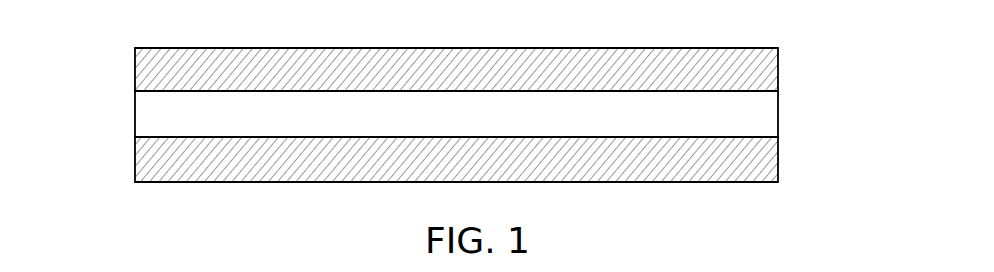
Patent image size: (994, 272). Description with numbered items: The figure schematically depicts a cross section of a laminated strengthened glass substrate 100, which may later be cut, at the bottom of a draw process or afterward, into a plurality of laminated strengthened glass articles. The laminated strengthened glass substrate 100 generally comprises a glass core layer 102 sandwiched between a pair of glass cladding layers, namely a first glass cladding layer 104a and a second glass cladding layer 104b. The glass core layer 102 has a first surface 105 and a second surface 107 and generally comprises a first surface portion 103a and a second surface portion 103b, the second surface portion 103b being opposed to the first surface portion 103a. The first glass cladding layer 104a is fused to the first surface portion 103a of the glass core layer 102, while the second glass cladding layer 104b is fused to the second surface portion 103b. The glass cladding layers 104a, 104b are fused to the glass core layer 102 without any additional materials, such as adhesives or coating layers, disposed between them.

The laminated strengthened glass substrate 100 is at (115, 4).
The glass core layer 102 is at (778, 112).
The first surface portion 103a is at (583, 89).
The second surface portion 103b is at (690, 140).
The first glass cladding layer 104a is at (778, 67).
The second glass cladding layer 104b is at (778, 157).
The first surface 105 is at (715, 46).
The second surface 107 is at (735, 185).